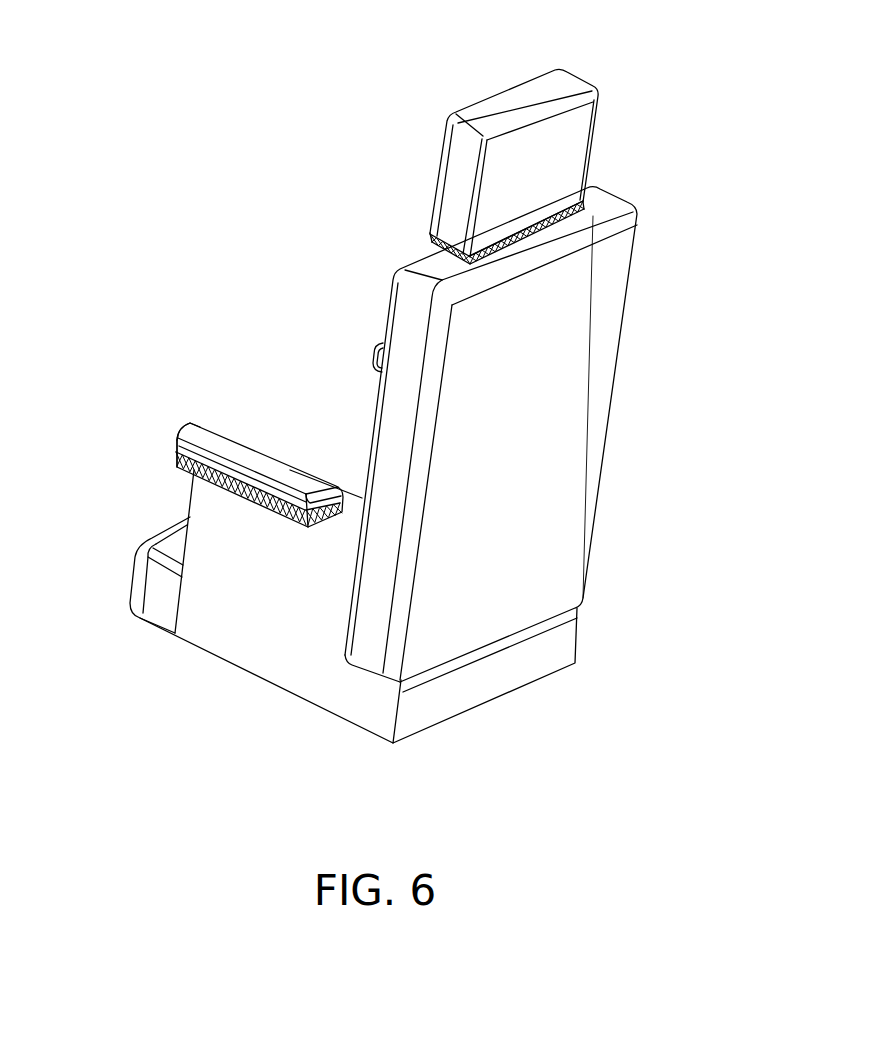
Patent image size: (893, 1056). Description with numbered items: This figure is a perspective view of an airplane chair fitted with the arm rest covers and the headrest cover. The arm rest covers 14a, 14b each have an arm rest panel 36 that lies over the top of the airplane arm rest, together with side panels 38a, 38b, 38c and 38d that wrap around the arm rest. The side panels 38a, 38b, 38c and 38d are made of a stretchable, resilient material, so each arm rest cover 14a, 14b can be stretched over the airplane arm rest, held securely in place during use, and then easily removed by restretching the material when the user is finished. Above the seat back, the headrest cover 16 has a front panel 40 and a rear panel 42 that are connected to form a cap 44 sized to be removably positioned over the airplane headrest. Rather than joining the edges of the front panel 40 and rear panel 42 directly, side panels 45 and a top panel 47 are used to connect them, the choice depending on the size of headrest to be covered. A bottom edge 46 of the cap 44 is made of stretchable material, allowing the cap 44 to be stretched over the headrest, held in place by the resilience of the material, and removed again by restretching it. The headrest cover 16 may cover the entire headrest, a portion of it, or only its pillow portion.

The headrest cover 16 is at (575, 74).
The top panel 47 is at (535, 95).
The front panel 40 is at (433, 165).
The side panels 45 is at (447, 202).
The cap 44 is at (593, 133).
The rear panel 42 is at (555, 167).
The bottom edge 46 is at (538, 237).
The arm rest cover 14b is at (375, 357).
The arm rest cover 14a is at (212, 432).
The arm rest panel 36 is at (263, 462).
The side panel 38a is at (177, 450).
The side panel 38b is at (233, 488).
The side panel 38d is at (320, 480).
The side panel 38c is at (333, 525).